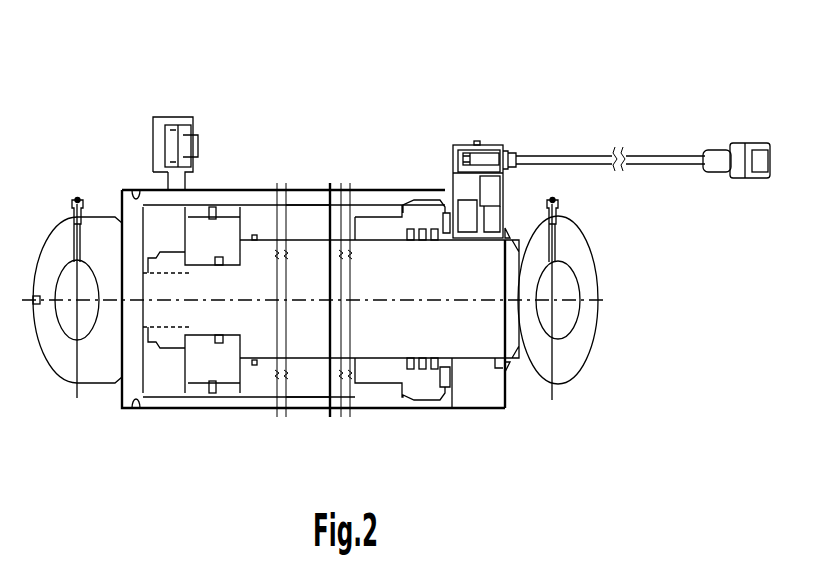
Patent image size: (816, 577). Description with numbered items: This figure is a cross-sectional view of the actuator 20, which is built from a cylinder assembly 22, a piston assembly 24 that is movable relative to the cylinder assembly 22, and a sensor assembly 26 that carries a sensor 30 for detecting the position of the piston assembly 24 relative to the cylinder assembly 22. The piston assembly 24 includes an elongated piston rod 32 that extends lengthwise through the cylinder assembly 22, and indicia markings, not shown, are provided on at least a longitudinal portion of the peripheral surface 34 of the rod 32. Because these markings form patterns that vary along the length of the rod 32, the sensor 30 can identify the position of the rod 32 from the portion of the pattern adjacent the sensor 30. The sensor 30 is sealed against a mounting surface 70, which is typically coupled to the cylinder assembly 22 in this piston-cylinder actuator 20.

The actuator 20 is at (358, 117).
The cylinder assembly 22 is at (255, 170).
The piston assembly 24 is at (597, 355).
The sensor assembly 26 is at (478, 127).
The sensor 30 is at (494, 160).
The piston rod 32 is at (380, 340).
The peripheral surface 34 is at (312, 358).
The mounting surface 70 is at (492, 208).